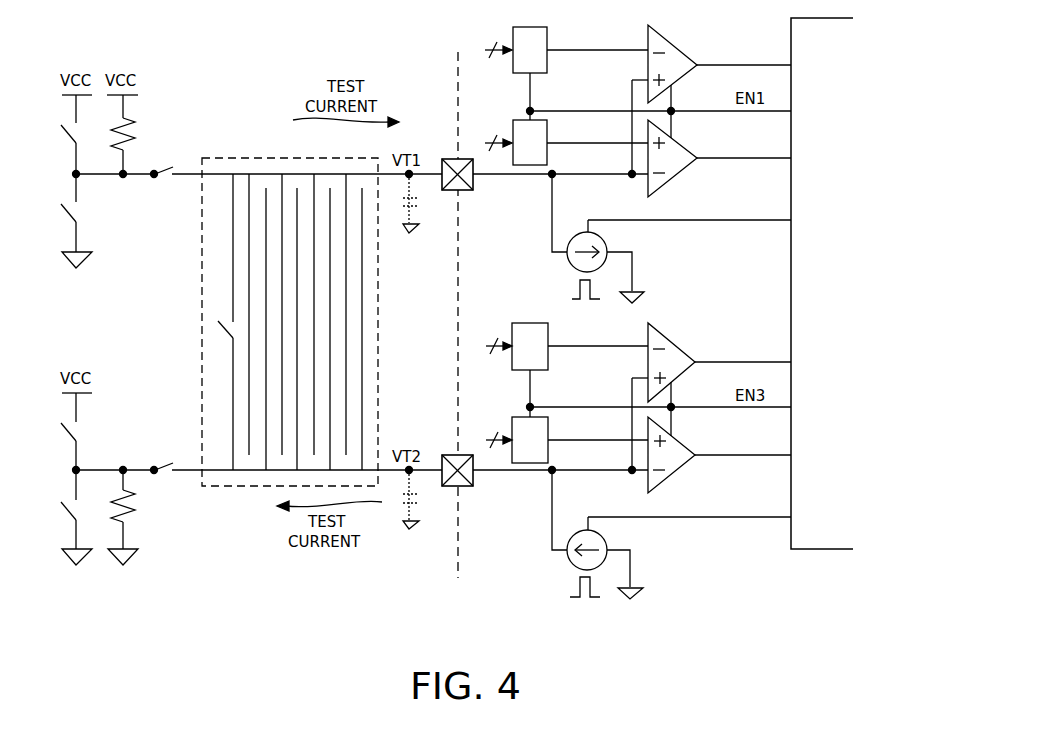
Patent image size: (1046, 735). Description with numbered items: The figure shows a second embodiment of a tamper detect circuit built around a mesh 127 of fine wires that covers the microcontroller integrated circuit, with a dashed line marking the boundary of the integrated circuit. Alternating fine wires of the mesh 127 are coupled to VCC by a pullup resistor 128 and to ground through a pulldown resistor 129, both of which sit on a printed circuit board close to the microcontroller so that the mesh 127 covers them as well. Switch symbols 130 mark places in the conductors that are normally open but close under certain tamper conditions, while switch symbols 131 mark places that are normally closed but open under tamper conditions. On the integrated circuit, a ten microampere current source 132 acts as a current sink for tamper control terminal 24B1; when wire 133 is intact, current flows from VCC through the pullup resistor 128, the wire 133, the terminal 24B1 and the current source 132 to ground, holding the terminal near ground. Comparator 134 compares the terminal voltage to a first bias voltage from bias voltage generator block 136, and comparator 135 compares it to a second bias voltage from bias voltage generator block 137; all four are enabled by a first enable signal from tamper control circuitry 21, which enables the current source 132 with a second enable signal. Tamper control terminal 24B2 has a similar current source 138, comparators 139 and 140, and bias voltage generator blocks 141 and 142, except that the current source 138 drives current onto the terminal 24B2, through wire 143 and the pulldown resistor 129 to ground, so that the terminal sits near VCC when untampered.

The tamper control circuitry 21 is at (841, 283).
The tamper control terminal 24B1 is at (442, 160).
The tamper control terminal 24B2 is at (442, 456).
The mesh of fine wires 127 is at (200, 290).
The pullup resistor 128 is at (138, 122).
The pulldown resistor 129 is at (140, 508).
The switch symbols 130 is at (66, 142).
The switch symbols 131 is at (160, 168).
The current source 132 is at (605, 241).
The wire 133 is at (423, 180).
The comparator 134 is at (672, 43).
The comparator 135 is at (668, 178).
The bias voltage generator block 136 is at (566, 50).
The bias voltage generator block 137 is at (566, 142).
The current source 138 is at (605, 540).
The comparator 139 is at (668, 340).
The comparator 140 is at (672, 478).
The bias voltage generator block 141 is at (567, 346).
The bias voltage generator block 142 is at (567, 440).
The wire 143 is at (423, 476).